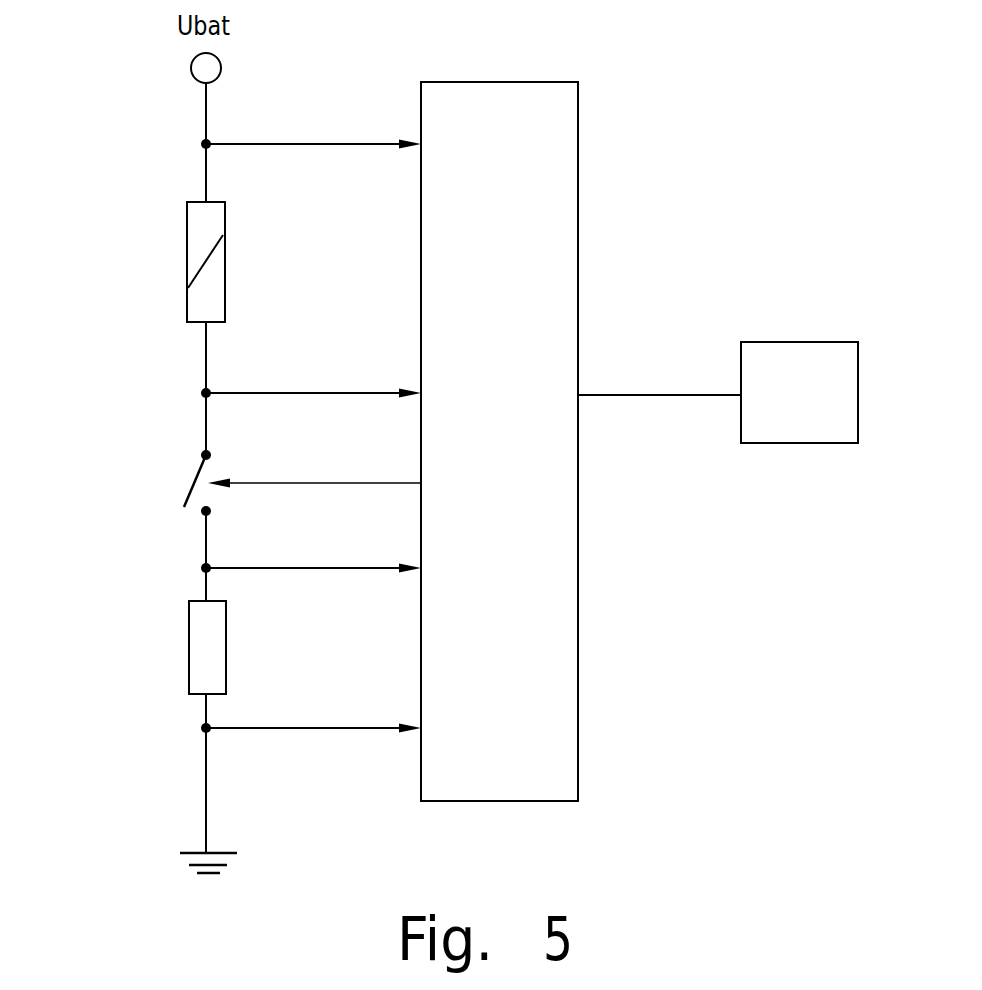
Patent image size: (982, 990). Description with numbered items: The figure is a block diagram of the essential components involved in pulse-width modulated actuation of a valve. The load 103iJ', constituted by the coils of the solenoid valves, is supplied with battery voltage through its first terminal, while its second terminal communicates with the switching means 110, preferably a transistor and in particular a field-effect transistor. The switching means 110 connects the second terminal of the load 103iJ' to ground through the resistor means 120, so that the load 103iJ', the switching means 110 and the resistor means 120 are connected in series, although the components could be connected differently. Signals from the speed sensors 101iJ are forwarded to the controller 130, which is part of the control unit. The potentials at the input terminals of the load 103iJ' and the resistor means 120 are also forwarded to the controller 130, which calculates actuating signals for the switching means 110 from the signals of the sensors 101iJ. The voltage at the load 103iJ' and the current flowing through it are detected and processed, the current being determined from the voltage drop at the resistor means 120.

The load 103iJ' is at (144, 262).
The switching means 110 is at (194, 483).
The resistor means 120 is at (189, 657).
The controller 130 is at (578, 698).
The sensors 101iJ is at (810, 342).